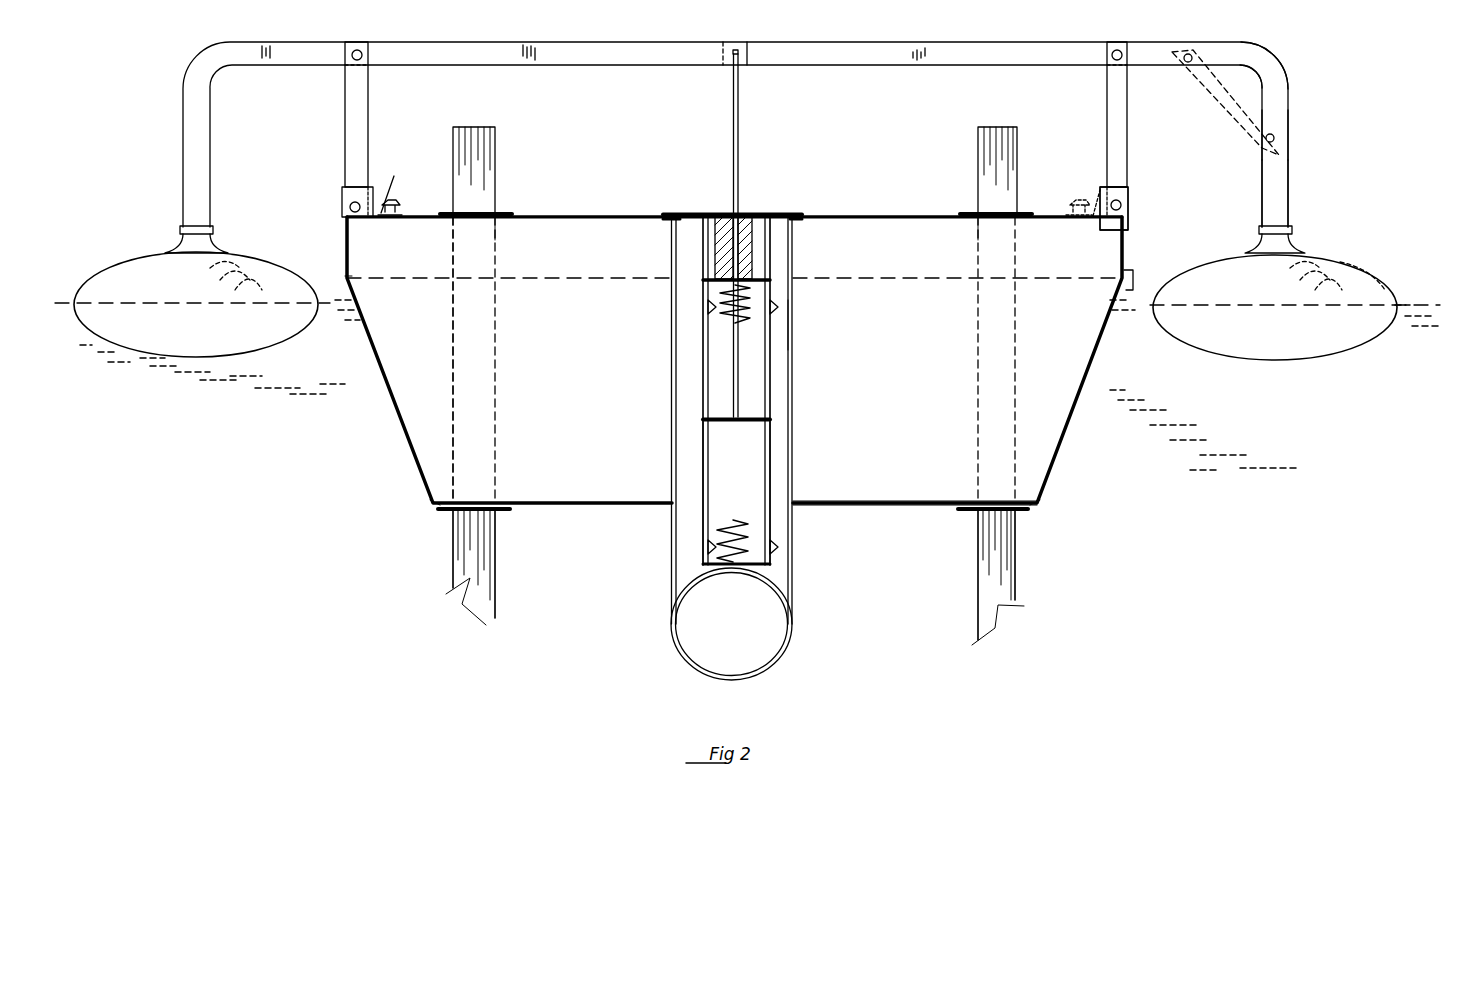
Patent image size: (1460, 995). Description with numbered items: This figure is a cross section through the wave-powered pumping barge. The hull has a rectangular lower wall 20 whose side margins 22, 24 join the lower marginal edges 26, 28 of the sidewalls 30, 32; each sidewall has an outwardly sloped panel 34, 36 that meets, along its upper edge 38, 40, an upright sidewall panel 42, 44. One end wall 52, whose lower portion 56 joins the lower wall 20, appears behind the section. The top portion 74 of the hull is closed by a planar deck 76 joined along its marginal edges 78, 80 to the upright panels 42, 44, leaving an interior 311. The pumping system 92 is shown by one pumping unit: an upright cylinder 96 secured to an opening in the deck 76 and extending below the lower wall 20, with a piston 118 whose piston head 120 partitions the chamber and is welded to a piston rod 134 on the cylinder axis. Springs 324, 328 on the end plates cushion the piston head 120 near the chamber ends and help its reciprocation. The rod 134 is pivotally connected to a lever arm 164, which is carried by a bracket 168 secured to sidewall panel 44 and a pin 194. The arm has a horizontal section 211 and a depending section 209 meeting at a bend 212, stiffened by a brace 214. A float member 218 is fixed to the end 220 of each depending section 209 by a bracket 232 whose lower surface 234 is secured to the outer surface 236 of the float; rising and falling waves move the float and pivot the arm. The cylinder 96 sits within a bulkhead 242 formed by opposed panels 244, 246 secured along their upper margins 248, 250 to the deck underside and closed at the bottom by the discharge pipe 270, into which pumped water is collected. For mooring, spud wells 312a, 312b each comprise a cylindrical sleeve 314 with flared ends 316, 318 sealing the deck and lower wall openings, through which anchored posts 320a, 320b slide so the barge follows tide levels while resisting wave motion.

The lower wall 20 is at (843, 510).
The side margin 22 is at (432, 508).
The side margin 24 is at (1040, 508).
The lower marginal edge 26 is at (427, 483).
The lower marginal edge 28 is at (1047, 490).
The sidewall 30 is at (402, 425).
The sidewall 32 is at (1084, 380).
The outwardly sloped panel 34 is at (375, 358).
The outwardly sloped panel 36 is at (1095, 347).
The upper edge 38 is at (347, 280).
The upper edge 40 is at (1142, 277).
The upright sidewall panel 42 is at (343, 243).
The upright sidewall panel 44 is at (1126, 248).
The end wall 52 is at (855, 361).
The lower portion 56 is at (825, 502).
The top portion 74 is at (1142, 221).
The deck 76 is at (855, 212).
The marginal edge 78 is at (377, 188).
The marginal edge 80 is at (1083, 193).
The pumping system 92 is at (785, 192).
The cylinder 96 is at (771, 440).
The piston 118 is at (727, 373).
The piston head 120 is at (737, 423).
The piston rod 134 is at (740, 110).
The lever arm 164 is at (928, 50).
The bracket 168 is at (1130, 207).
The pin 194 is at (1124, 193).
The depending section 209 is at (1290, 167).
The horizontal arm section 211 is at (1138, 50).
The lever arm bend 212 is at (1290, 67).
The brace 214 is at (1222, 93).
The float member 218 is at (1247, 296).
The end of lever arm section 220 is at (1282, 198).
The bracket 232 is at (1295, 233).
The lower surface 234 is at (1250, 247).
The outer surface 236 is at (1380, 278).
The bulkhead 242 is at (795, 326).
The bulkhead panel 244 is at (671, 352).
The bulkhead panel 246 is at (790, 378).
The upper margin 248 is at (668, 221).
The upper margin 250 is at (795, 222).
The discharge pipe 270 is at (794, 637).
The interior 311 is at (897, 478).
The spud well 312a is at (514, 212).
The spud well 312b is at (969, 212).
The cylindrical sleeve 314 is at (498, 440).
The flared end 316 is at (447, 212).
The flared end 318 is at (500, 512).
The post 320a is at (497, 145).
The post 320b is at (1000, 148).
The spring 324 is at (742, 322).
The spring 328 is at (735, 522).